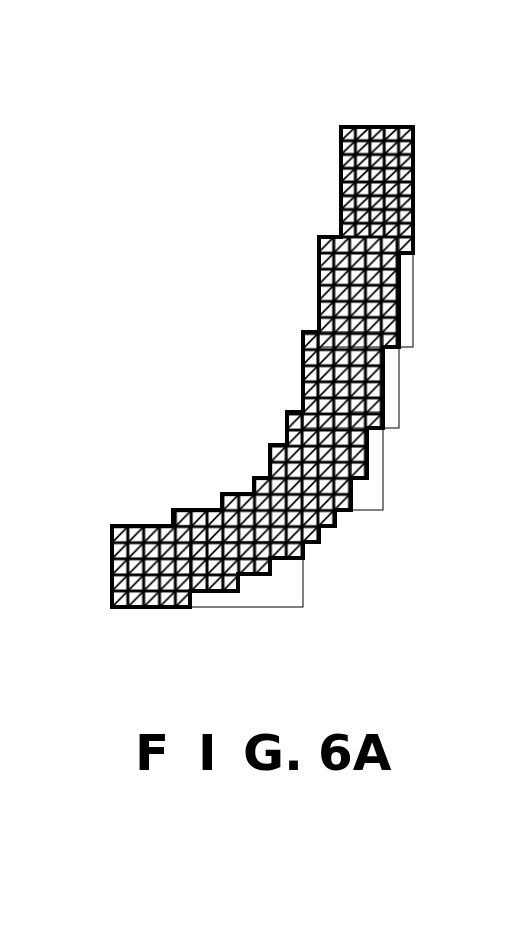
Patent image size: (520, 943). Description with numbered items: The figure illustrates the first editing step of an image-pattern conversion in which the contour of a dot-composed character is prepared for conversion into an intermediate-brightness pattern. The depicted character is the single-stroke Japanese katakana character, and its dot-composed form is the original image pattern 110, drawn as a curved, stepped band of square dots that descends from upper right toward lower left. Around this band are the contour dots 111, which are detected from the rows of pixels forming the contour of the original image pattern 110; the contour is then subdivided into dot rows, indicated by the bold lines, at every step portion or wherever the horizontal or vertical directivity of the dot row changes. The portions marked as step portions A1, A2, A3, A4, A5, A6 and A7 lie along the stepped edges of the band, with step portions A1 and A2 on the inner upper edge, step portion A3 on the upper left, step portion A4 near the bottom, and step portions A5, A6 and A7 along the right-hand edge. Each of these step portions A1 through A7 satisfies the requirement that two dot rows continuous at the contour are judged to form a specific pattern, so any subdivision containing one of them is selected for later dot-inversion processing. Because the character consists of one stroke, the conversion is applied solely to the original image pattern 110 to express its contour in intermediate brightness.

The original image pattern 110 is at (373, 124).
The contour dots 111 is at (415, 167).
The step portion A1 is at (333, 231).
The step portion A2 is at (316, 325).
The step portion A3 is at (167, 521).
The step portion A4 is at (195, 598).
The step portion A5 is at (380, 440).
The step portion A6 is at (394, 355).
The step portion A7 is at (409, 263).